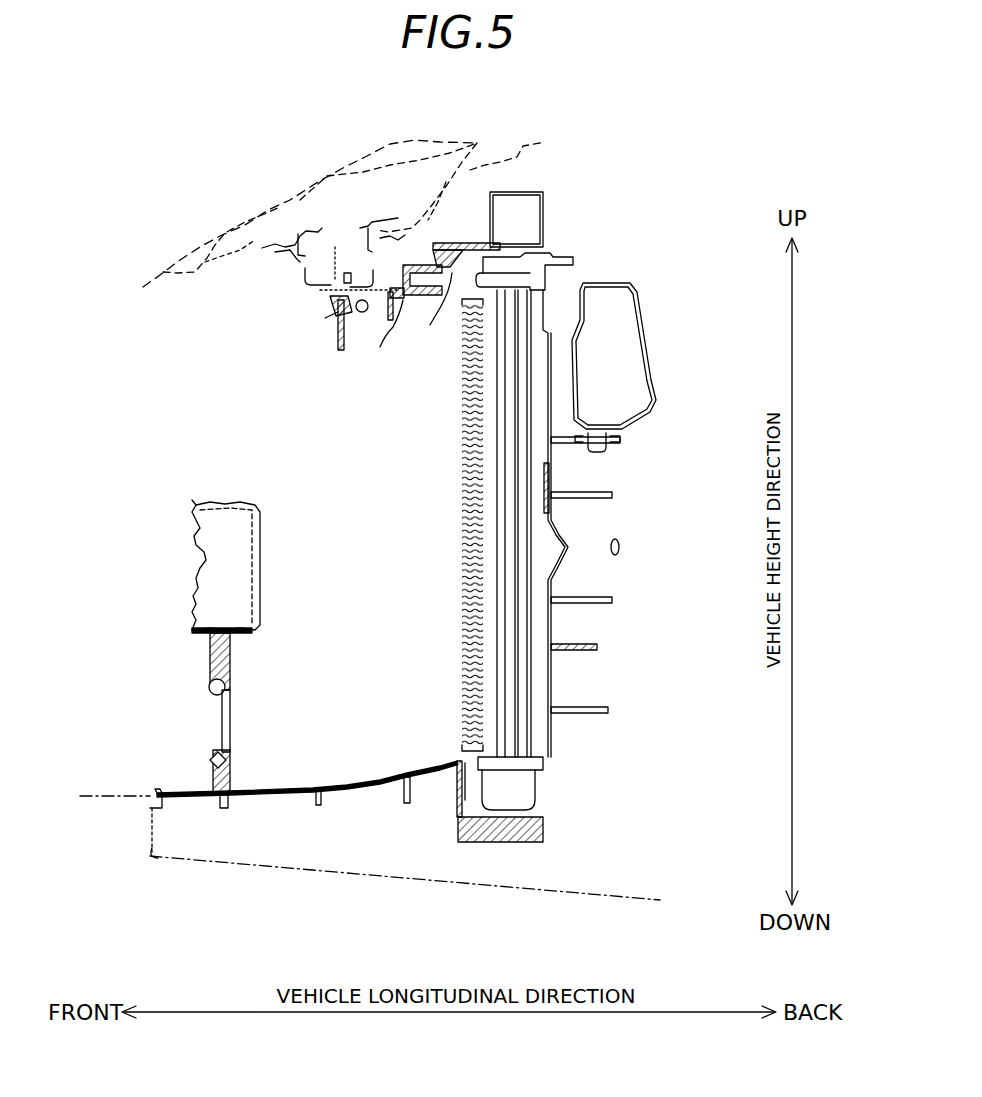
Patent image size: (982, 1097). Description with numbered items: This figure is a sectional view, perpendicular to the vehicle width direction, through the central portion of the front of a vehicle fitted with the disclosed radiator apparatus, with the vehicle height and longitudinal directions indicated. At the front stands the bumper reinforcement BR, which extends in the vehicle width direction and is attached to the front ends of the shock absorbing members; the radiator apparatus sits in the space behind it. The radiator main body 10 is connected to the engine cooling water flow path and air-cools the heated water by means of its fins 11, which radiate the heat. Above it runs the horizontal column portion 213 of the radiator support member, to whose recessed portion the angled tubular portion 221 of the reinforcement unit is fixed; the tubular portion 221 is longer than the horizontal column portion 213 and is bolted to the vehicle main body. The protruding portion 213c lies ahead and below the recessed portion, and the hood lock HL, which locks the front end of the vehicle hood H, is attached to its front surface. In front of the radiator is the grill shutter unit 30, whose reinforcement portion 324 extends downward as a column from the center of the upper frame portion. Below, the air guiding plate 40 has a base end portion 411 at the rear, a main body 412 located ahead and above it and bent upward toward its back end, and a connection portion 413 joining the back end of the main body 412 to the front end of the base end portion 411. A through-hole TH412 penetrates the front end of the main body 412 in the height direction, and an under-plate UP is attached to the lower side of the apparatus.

The radiator main body 10 is at (658, 312).
The fins 11 is at (460, 666).
The horizontal column portion 213 is at (460, 241).
The tubular portion 221 is at (425, 304).
The protruding portion 213c is at (388, 342).
The grill shutter unit 30 is at (210, 650).
The reinforcement portion 324 is at (212, 777).
The air guiding plate 40 is at (325, 788).
The base end portion 411 is at (516, 842).
The main body 412 is at (377, 779).
The connection portion 413 is at (455, 805).
The vehicle hood H is at (344, 207).
The hood lock HL is at (333, 289).
The bumper reinforcement BR is at (188, 546).
The through-hole TH412 is at (225, 806).
The under-plate UP is at (257, 903).